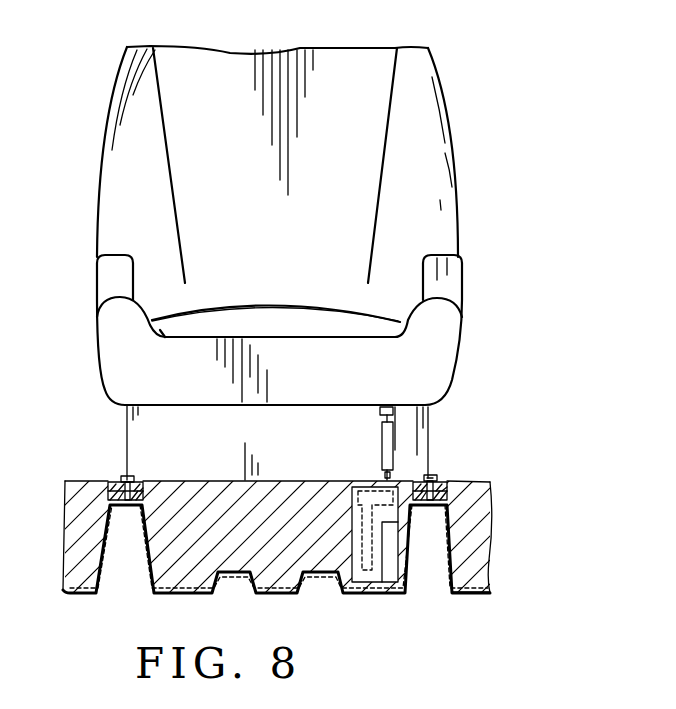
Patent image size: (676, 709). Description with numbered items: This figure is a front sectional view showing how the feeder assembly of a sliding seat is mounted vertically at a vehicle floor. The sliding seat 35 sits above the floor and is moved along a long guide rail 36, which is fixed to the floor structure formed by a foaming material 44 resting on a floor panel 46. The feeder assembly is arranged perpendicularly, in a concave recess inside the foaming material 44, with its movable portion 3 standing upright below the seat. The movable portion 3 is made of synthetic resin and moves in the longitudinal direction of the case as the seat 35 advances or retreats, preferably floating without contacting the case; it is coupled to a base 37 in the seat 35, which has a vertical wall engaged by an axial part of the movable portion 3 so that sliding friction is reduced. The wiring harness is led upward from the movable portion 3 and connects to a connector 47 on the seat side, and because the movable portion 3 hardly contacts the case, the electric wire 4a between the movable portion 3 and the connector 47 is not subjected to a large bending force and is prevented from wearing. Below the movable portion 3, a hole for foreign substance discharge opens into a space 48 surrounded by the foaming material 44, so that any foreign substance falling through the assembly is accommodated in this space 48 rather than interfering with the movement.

The sliding seat 35 is at (459, 199).
The electric wire 4a is at (432, 413).
The connector 47 is at (380, 411).
The movable portion 3 is at (382, 451).
The foaming material 44 is at (207, 500).
The guide rail 36 is at (447, 483).
The base 37 is at (432, 440).
The floor panel 46 is at (452, 541).
The space 48 is at (387, 563).